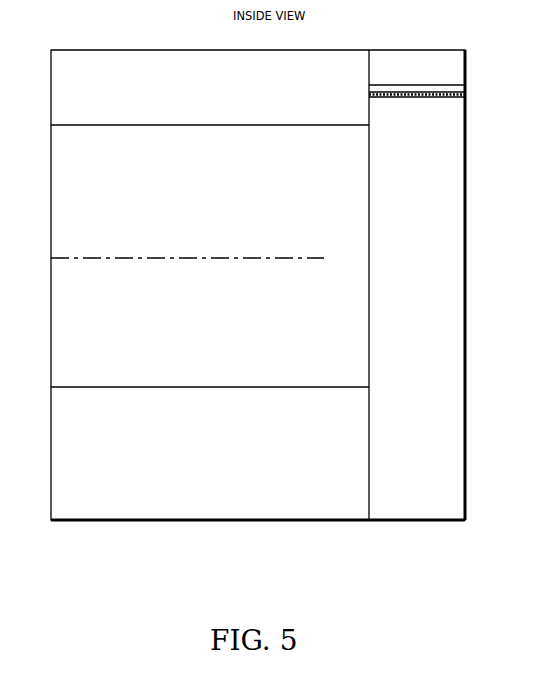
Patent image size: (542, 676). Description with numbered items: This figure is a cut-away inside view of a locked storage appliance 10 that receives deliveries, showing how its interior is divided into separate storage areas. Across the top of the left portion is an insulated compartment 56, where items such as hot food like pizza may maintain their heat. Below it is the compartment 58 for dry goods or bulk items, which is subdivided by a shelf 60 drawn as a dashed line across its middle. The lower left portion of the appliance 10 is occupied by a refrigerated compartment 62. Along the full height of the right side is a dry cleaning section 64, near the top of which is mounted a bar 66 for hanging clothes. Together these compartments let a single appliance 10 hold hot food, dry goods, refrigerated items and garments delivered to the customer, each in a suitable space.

The appliance 10 is at (236, 522).
The insulated compartment 56 is at (315, 73).
The compartment 58 is at (69, 204).
The shelf 60 is at (326, 258).
The refrigerated compartment 62 is at (121, 483).
The dry cleaning section 64 is at (443, 201).
The bar 66 is at (437, 83).